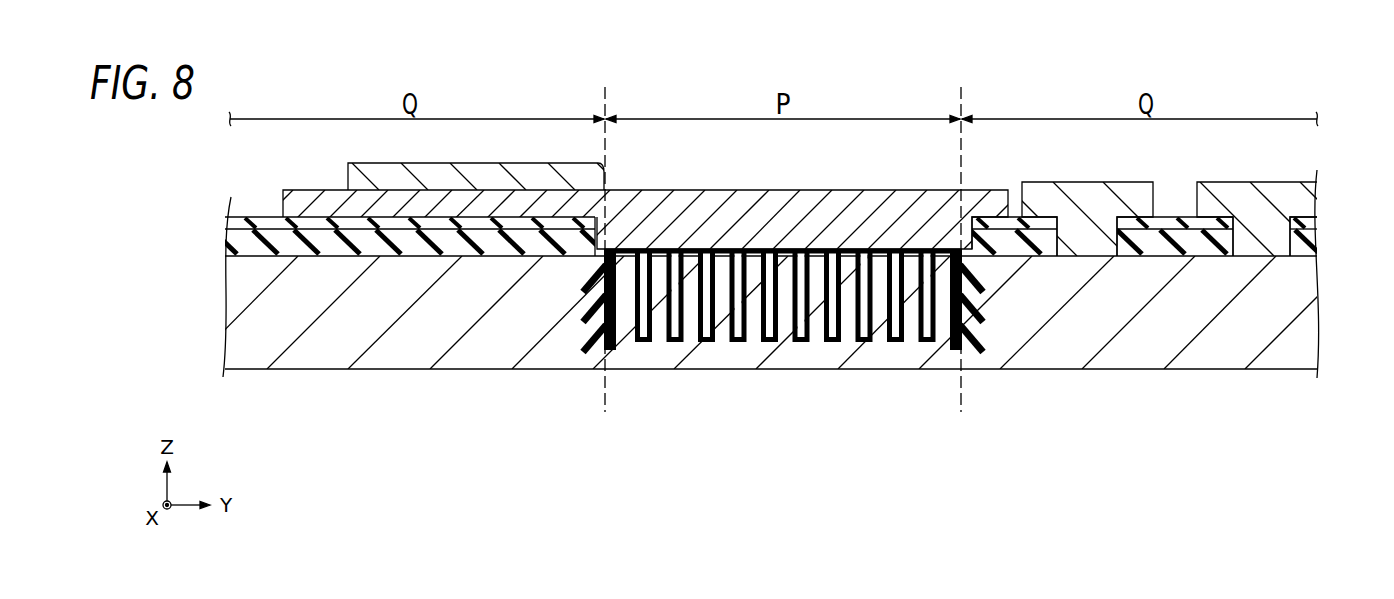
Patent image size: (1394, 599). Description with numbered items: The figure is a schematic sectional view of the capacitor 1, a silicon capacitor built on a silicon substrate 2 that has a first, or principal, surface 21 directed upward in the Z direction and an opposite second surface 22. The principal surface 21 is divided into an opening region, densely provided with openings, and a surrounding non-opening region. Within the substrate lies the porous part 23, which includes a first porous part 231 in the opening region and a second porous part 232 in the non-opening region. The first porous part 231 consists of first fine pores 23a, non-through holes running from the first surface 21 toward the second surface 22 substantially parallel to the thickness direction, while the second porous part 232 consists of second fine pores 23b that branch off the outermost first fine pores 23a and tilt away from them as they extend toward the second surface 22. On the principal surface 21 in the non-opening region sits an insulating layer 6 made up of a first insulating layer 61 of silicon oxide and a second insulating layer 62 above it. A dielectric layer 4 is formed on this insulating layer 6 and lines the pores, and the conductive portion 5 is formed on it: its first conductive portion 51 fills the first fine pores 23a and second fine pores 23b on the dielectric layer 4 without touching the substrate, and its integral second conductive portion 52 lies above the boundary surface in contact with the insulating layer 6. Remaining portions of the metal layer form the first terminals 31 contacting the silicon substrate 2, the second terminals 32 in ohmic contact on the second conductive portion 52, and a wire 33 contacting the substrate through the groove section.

The capacitor 1 is at (1332, 131).
The silicon substrate 2 is at (1307, 283).
The dielectric layer 4 is at (845, 250).
The conductive portion 5 is at (876, 197).
The insulating layer 6 is at (171, 205).
The first surface 21 is at (1195, 252).
The second surface 22 is at (1165, 370).
The porous part 23 is at (703, 343).
The first fine pore 23a is at (862, 343).
The second fine pore 23b is at (583, 347).
The first terminal 31 is at (1272, 192).
The second terminal 32 is at (480, 175).
The wire 33 is at (1087, 192).
The first conductive portion 51 is at (729, 222).
The second conductive portion 52 is at (392, 200).
The first insulating layer 61 is at (228, 242).
The second insulating layer 62 is at (228, 223).
The first porous part 231 is at (797, 343).
The second porous part 232 is at (587, 297).